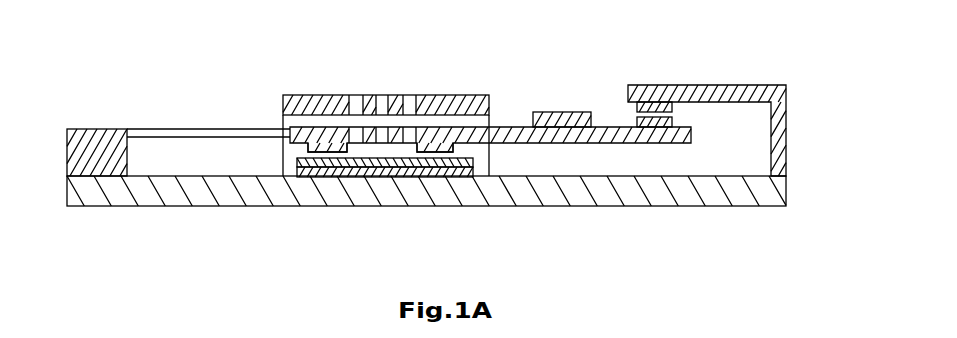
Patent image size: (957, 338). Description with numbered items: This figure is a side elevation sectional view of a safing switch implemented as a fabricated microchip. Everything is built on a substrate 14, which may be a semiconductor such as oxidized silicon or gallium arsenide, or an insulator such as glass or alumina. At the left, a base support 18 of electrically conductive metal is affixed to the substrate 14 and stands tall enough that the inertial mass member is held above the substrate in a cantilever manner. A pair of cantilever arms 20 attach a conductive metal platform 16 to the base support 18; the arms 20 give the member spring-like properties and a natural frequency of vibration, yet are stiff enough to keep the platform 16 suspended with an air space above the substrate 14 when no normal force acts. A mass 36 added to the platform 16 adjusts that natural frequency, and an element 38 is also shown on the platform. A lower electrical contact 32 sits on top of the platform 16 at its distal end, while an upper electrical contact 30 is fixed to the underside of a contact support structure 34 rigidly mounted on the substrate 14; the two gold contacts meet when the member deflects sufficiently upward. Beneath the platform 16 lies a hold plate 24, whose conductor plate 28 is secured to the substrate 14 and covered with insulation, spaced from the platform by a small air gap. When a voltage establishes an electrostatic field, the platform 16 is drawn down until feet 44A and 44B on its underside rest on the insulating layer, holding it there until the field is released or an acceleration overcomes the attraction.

The substrate 14 is at (683, 195).
The platform 16 is at (627, 142).
The base support 18 is at (75, 158).
The cantilever arms 20 is at (193, 129).
The hold plate 24 is at (418, 178).
The conductor plate 28 is at (426, 177).
The upper electrical contact 30 is at (637, 107).
The lower electrical contact 32 is at (672, 118).
The contact support structure 34 is at (787, 107).
The mass 36 is at (562, 112).
The top electrode 38 is at (328, 95).
The foot 44A is at (307, 149).
The foot 44B is at (453, 148).